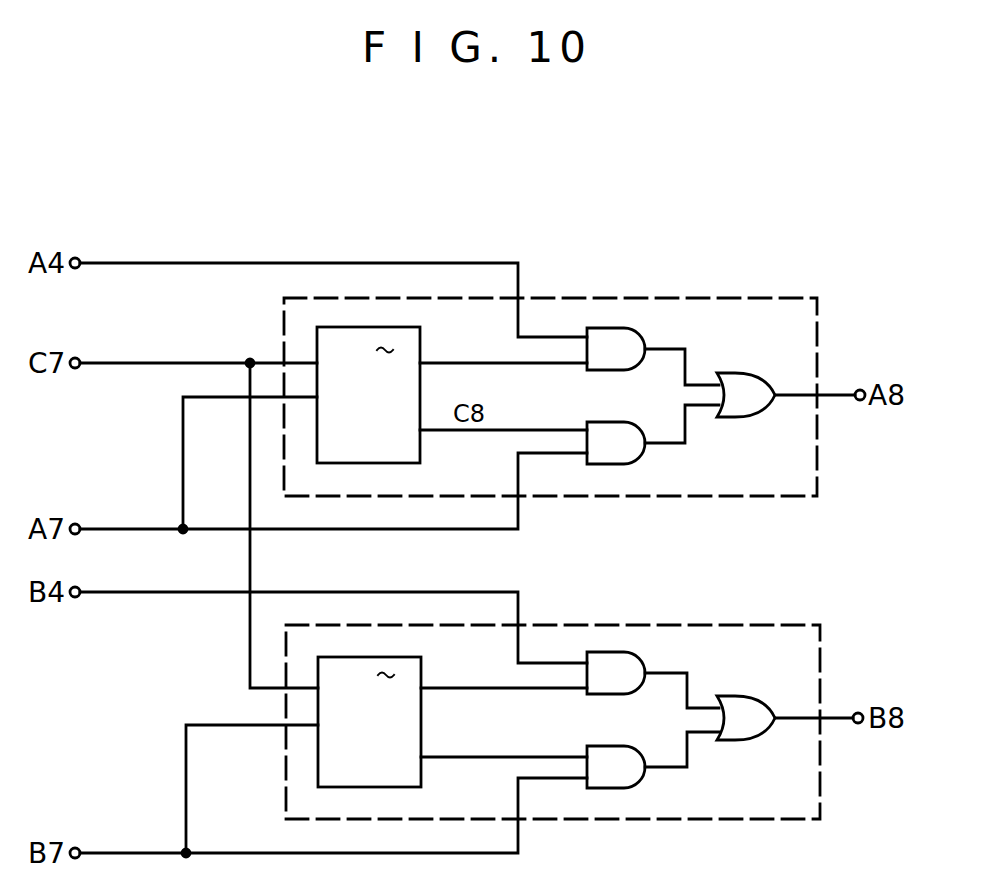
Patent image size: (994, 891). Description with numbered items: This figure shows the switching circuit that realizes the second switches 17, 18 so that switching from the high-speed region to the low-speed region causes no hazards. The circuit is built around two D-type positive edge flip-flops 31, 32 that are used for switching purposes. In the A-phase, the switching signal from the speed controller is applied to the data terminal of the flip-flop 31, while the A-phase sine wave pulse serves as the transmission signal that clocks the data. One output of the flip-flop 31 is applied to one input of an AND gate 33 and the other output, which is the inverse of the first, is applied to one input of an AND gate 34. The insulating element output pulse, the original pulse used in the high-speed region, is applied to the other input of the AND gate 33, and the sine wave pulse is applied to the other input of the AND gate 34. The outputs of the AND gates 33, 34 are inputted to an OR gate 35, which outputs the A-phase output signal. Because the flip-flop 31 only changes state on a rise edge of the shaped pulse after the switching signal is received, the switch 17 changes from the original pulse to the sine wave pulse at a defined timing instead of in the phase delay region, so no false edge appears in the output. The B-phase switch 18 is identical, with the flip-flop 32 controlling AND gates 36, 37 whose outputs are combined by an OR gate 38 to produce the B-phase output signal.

The second switch 17 is at (633, 297).
The second switch 18 is at (638, 820).
The D-type positive edge flip-flop 31 is at (420, 333).
The D-type positive edge flip-flop 32 is at (421, 665).
The AND gate 33 is at (637, 330).
The AND gate 34 is at (648, 422).
The OR gate 35 is at (752, 373).
The AND gate 36 is at (638, 654).
The AND gate 37 is at (648, 746).
The OR gate 38 is at (752, 697).